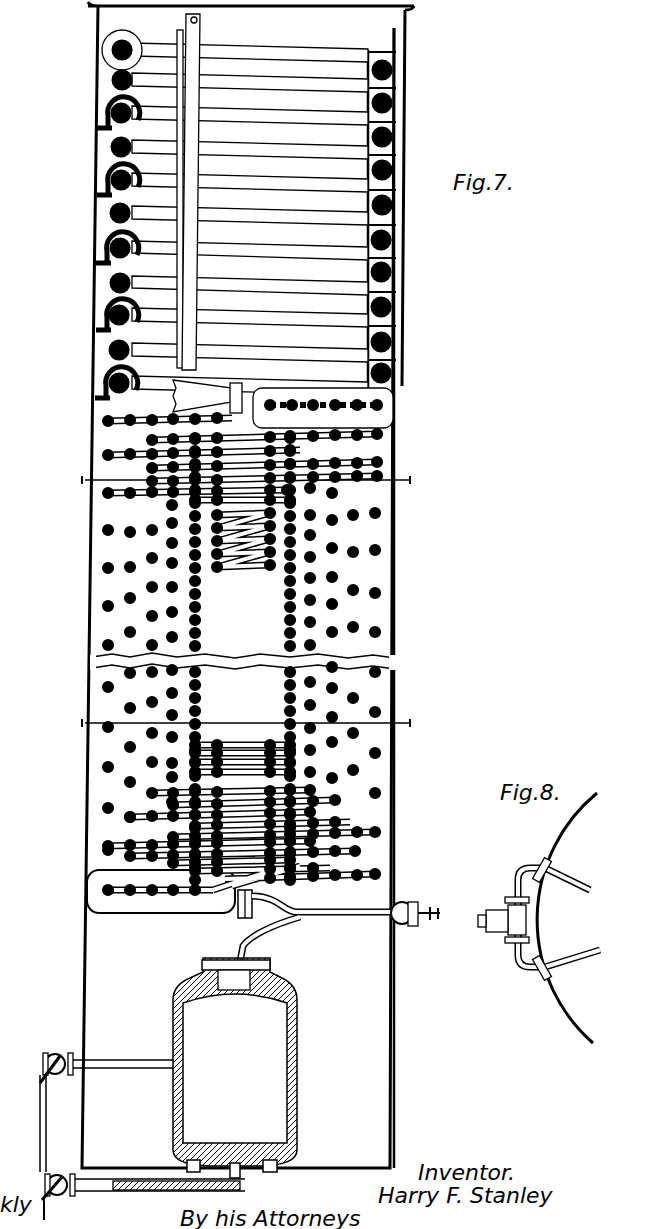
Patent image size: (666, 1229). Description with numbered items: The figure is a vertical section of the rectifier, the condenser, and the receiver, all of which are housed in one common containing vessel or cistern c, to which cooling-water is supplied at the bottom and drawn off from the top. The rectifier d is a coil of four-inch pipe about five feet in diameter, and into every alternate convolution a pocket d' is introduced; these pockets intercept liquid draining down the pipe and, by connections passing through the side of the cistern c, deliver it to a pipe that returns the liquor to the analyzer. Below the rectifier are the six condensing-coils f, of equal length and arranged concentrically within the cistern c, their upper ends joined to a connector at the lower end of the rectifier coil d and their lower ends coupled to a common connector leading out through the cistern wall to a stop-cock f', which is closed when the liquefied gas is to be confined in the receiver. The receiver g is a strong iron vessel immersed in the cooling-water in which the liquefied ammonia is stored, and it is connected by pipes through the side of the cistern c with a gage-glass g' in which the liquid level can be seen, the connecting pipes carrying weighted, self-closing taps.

In FIG. 7, the cistern c is at (241, 585).
In FIG. 8, the cistern c is at (567, 918).
In FIG. 7, the rectifier d is at (247, 221).
In FIG. 7, the pocket d' is at (93, 260).
In FIG. 7, the condensing-coils f is at (232, 665).
In FIG. 7, the stop-cock f' is at (339, 917).
In FIG. 8, the stop-cock f' is at (539, 919).
In FIG. 7, the receiver g is at (235, 1068).
In FIG. 7, the gage-glass g' is at (128, 1125).